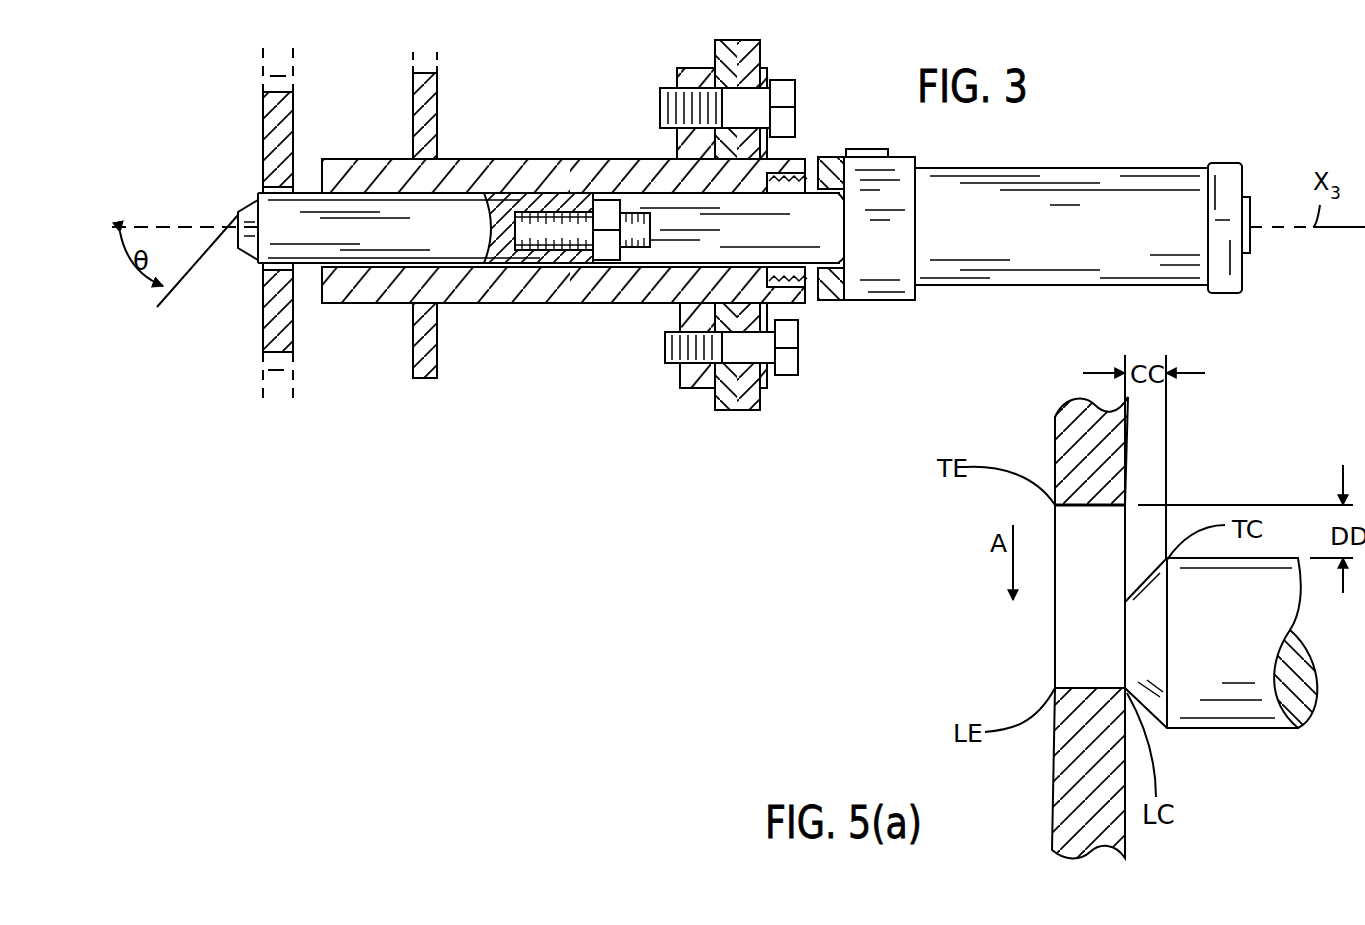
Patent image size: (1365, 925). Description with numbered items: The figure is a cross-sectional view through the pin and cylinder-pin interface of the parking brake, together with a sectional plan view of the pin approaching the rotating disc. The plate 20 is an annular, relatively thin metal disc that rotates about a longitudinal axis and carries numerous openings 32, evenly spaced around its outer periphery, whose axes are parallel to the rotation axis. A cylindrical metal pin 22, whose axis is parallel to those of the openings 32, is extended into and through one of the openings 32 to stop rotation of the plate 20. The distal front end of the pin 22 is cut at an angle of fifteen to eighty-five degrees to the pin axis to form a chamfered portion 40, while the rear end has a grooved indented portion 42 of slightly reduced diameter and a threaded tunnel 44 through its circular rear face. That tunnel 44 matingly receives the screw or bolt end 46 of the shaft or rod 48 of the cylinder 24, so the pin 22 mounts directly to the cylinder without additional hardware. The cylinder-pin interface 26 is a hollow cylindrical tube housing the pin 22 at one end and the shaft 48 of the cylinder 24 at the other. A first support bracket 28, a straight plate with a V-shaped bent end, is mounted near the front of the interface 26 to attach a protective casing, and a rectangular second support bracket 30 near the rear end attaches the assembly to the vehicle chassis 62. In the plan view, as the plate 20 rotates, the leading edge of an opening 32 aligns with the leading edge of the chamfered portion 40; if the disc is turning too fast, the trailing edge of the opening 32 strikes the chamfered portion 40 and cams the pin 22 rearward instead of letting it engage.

In FIG. 3, the plate 20 is at (270, 150).
In FIG. 5a, the plate 20 is at (1062, 420).
In FIG. 3, the pin 22 is at (313, 250).
In FIG. 5a, the pin 22 is at (1240, 715).
In FIG. 3, the cylinder 24 is at (1045, 212).
In FIG. 3, the cylinder-pin interface 26 is at (617, 173).
In FIG. 3, the first support bracket 28 is at (428, 140).
In FIG. 3, the second support bracket 30 is at (677, 70).
In FIG. 3, the openings 32 is at (263, 273).
In FIG. 5a, the openings 32 is at (1078, 632).
In FIG. 3, the chamfered portion 40 is at (236, 212).
In FIG. 5a, the chamfered portion 40 is at (1137, 700).
In FIG. 3, the indented portion 42 is at (577, 263).
In FIG. 3, the threaded tunnel 44 is at (530, 263).
In FIG. 3, the screw or bolt end 46 is at (543, 217).
In FIG. 3, the shaft or rod 48 is at (816, 222).
In FIG. 3, the chassis 62 is at (758, 48).